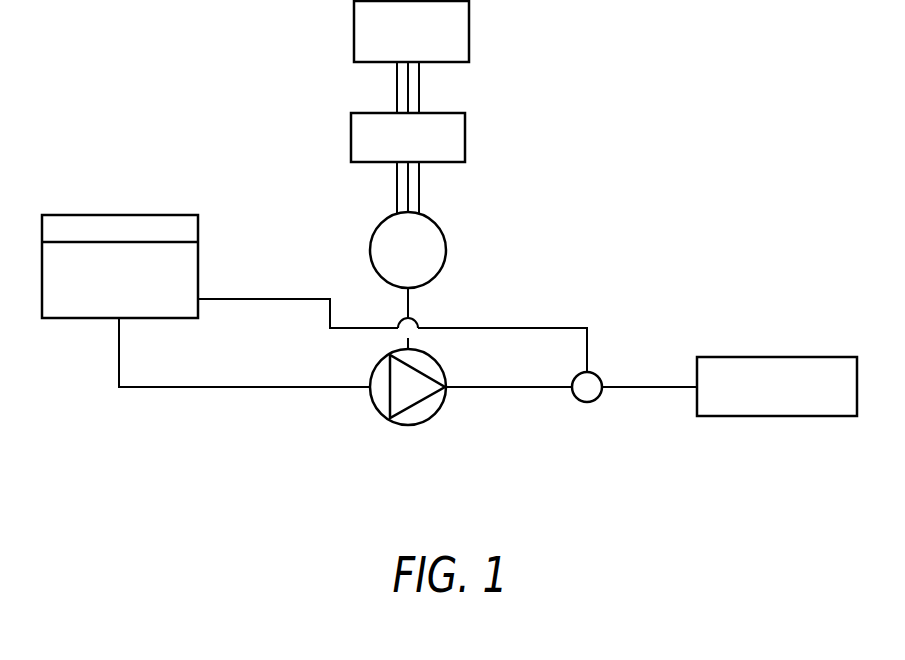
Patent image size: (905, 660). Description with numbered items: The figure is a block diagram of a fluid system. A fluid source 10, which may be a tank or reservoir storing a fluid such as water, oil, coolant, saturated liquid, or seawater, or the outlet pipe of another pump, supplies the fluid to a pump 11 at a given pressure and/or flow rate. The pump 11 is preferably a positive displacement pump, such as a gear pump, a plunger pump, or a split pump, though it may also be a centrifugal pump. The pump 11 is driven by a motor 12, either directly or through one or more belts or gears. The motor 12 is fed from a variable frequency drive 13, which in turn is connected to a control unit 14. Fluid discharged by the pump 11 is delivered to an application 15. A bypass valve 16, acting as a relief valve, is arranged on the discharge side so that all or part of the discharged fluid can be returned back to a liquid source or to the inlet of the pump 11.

The fluid source 10 is at (198, 265).
The pump 11 is at (423, 425).
The motor 12 is at (446, 248).
The variable frequency drive (VFD) 13 is at (465, 133).
The control unit 14 is at (469, 29).
The application 15 is at (775, 357).
The bypass valve 16 is at (587, 402).